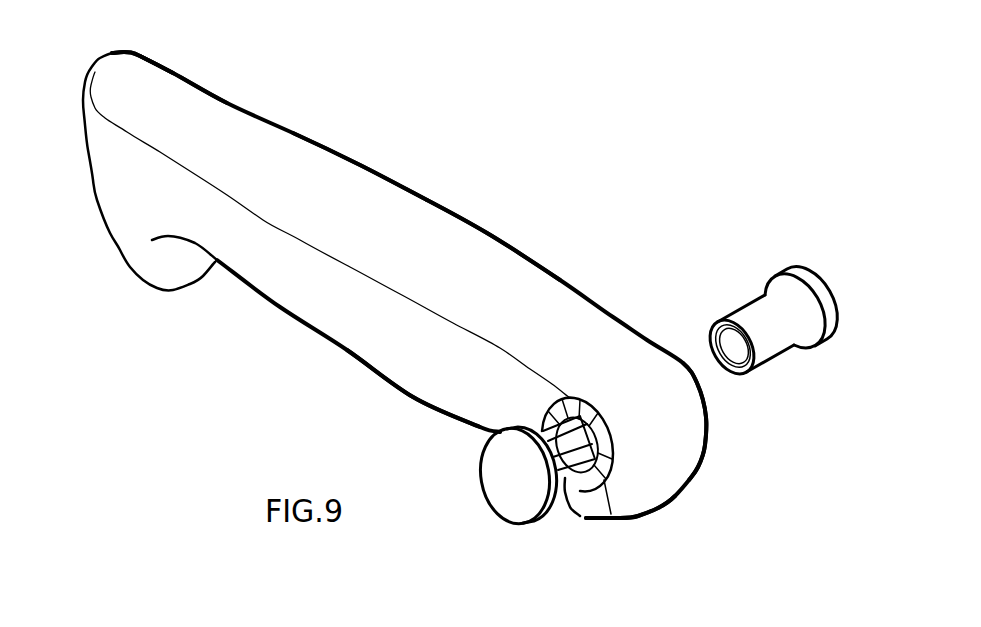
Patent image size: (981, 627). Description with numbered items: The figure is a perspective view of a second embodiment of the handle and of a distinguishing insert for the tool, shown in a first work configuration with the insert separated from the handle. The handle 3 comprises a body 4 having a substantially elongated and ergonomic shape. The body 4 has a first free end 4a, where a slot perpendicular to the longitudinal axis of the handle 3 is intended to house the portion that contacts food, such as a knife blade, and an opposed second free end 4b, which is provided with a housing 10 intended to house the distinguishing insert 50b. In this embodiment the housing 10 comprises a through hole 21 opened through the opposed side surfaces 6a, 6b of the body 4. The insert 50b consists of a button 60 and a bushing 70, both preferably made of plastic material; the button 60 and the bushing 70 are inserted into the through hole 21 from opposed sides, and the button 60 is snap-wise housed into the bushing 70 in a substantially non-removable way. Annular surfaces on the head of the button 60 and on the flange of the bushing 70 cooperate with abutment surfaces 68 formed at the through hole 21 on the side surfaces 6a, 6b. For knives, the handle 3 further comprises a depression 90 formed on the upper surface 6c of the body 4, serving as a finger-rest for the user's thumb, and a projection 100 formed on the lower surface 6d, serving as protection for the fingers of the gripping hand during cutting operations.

The handle portion 3 is at (252, 382).
The body 4 is at (512, 284).
The first free end 4a is at (136, 46).
The second free end 4b is at (711, 450).
The side surface 6a is at (333, 333).
The side surface 6b is at (495, 231).
The upper surface 6c is at (368, 181).
The lower surface 6d is at (417, 406).
The housing 10 is at (628, 530).
The through hole 21 is at (587, 480).
The distinguishing insert 50b is at (473, 529).
The button 60 is at (537, 530).
The abutment surface 68 is at (602, 473).
The bushing 70 is at (741, 278).
The depression 90 is at (157, 83).
The projection 100 is at (185, 267).